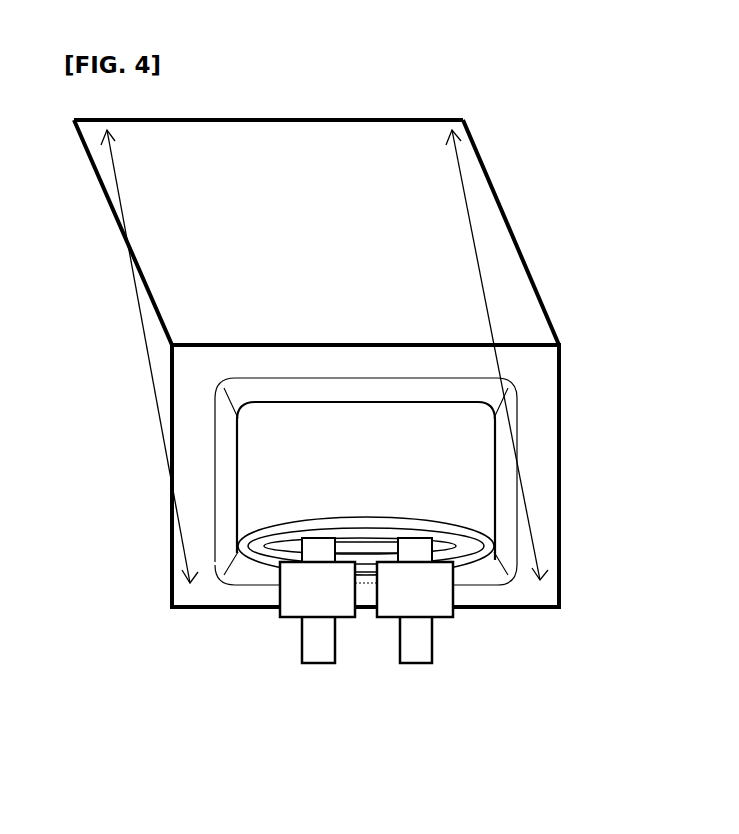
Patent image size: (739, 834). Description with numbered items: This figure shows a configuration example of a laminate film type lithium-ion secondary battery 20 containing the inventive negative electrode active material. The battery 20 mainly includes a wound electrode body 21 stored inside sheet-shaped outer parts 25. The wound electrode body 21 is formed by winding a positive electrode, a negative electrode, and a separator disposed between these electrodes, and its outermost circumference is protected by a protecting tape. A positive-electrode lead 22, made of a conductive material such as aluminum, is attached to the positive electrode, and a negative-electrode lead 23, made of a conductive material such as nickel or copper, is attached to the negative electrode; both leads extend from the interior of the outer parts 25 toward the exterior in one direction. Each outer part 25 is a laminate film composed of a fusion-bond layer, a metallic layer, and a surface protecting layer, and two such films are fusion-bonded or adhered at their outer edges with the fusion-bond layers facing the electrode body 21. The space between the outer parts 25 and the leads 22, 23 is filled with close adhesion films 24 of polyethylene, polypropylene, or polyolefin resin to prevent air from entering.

The laminate film type lithium-ion secondary battery 20 is at (507, 132).
The wound electrode body 21 is at (452, 463).
The positive-electrode lead 22 is at (313, 645).
The negative-electrode lead 23 is at (413, 647).
The close adhesion film 24 is at (438, 596).
The sheet-shaped outer part 25 is at (385, 237).